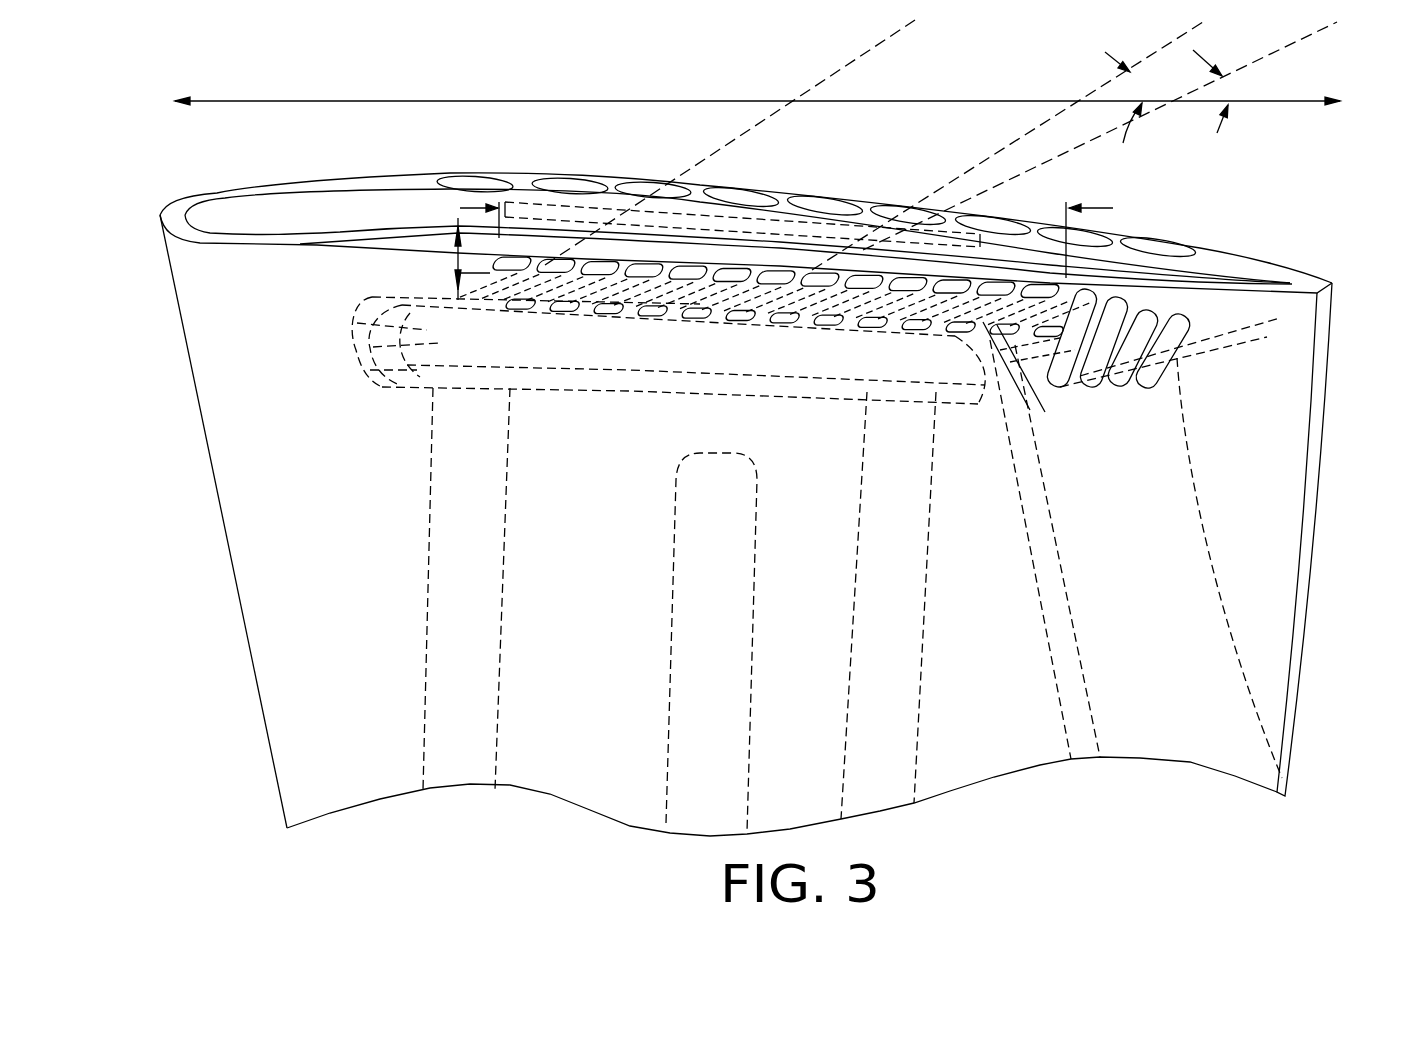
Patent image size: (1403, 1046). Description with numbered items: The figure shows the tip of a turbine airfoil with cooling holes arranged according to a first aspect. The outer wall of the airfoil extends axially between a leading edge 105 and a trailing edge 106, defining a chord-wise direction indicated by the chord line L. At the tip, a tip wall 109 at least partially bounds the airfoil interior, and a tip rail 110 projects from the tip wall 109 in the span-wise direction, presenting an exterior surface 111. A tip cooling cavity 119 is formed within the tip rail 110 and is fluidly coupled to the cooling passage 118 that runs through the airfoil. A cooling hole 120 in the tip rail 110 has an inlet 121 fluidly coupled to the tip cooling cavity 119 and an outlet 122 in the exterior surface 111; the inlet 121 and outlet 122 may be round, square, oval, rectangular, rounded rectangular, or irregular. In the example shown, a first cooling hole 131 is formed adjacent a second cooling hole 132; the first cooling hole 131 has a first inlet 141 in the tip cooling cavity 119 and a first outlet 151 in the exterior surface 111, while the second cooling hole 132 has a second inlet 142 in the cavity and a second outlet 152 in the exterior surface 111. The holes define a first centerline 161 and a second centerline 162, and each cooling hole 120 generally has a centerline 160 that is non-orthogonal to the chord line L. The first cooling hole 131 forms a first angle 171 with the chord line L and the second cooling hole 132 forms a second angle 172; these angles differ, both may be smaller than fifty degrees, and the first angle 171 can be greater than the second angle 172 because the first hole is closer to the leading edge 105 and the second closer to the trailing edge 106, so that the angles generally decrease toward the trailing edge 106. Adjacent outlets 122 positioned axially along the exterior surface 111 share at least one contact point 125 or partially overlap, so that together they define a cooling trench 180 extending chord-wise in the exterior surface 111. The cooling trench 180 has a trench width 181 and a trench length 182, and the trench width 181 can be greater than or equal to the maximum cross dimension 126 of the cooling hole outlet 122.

The leading edge 105 is at (212, 473).
The trailing edge 106 is at (1289, 664).
The tip wall 109 is at (303, 200).
The tip rail 110 is at (247, 204).
The exterior surface 111 is at (1271, 353).
The cooling passage 118 is at (467, 593).
The tip cooling cavity 119 is at (445, 343).
The cooling hole 120 is at (1035, 405).
The inlet 121 is at (953, 343).
The outlet 122 is at (1119, 331).
The contact point 125 is at (963, 288).
The maximum cross dimension 126 is at (458, 222).
The first cooling hole 131 is at (612, 335).
The second cooling hole 132 is at (670, 335).
The first inlet 141 is at (606, 308).
The second inlet 142 is at (660, 310).
The first outlet 151 is at (803, 263).
The second outlet 152 is at (852, 262).
The centerline 160 is at (850, 62).
The first centerline 161 is at (1151, 57).
The second centerline 162 is at (1258, 58).
The first angle 171 is at (1105, 52).
The second angle 172 is at (1217, 133).
The cooling trench 180 is at (563, 200).
The trench width 181 is at (1105, 206).
The trench length 182 is at (472, 259).
The chord line L is at (285, 100).